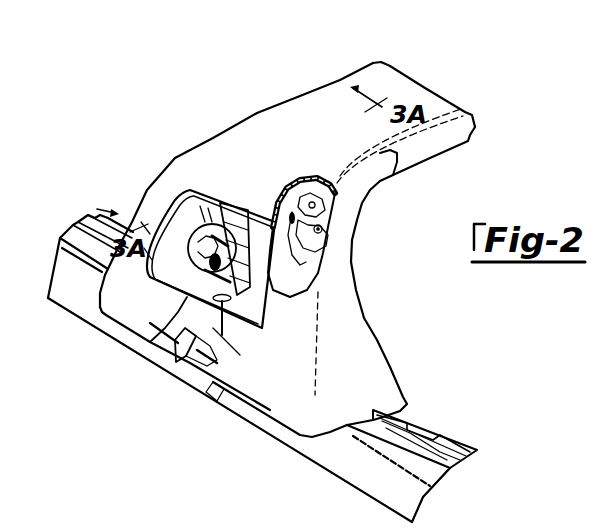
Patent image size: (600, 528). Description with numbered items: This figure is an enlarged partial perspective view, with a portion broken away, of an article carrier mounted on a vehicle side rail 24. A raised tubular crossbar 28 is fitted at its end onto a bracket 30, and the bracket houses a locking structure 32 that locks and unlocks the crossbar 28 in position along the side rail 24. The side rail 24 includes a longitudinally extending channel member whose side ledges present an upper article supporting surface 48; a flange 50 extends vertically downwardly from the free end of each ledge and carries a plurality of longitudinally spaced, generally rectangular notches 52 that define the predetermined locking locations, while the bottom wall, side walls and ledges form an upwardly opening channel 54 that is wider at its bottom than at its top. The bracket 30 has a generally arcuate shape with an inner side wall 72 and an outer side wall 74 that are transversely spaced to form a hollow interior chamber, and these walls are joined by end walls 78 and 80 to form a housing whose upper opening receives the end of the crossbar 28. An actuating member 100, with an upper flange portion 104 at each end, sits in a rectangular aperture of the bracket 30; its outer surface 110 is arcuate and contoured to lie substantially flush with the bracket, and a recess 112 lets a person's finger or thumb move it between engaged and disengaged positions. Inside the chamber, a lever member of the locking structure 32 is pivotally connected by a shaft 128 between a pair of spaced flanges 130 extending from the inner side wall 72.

The side rail 24 is at (262, 368).
The crossbar 28 is at (335, 76).
The bracket 30 is at (236, 185).
The locking structure 32 is at (211, 216).
The article supporting surface 48 is at (423, 407).
The flange 50 is at (441, 433).
The notches 52 is at (426, 421).
The channel 54 is at (453, 495).
The inner side wall 72 is at (333, 237).
The outer side wall 74 is at (293, 419).
The end wall 78 is at (365, 341).
The end wall 80 is at (185, 275).
The actuating member 100 is at (510, 518).
The upper flange portion 104 is at (563, 527).
The outer surface 110 is at (198, 253).
The recess 112 is at (182, 350).
The shaft 128 is at (348, 239).
The flanges 130 is at (340, 229).